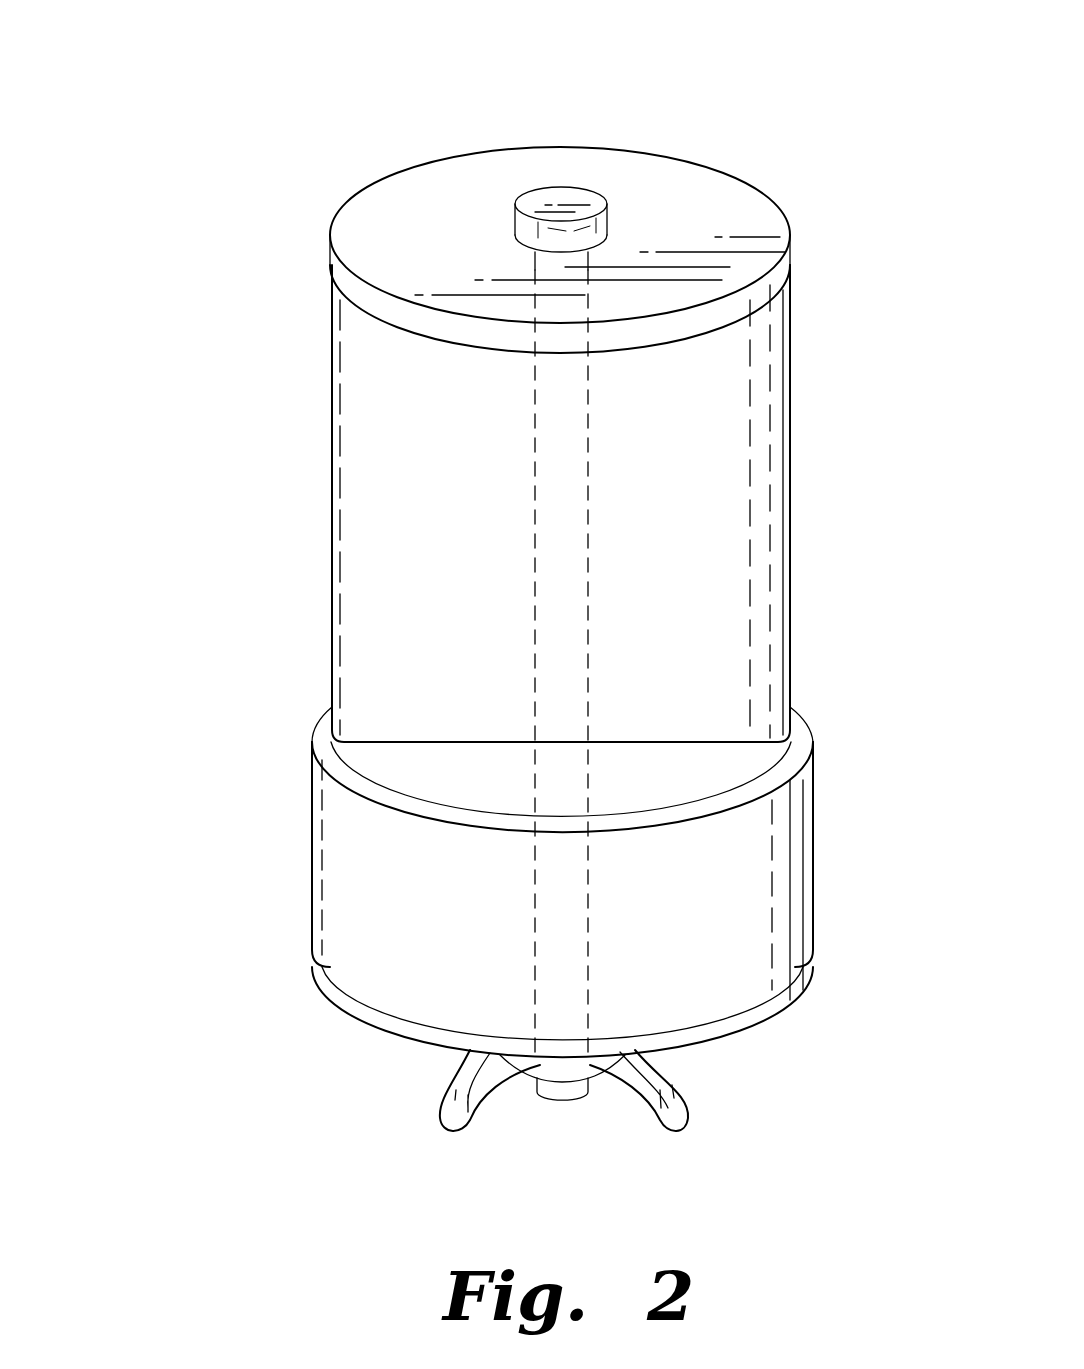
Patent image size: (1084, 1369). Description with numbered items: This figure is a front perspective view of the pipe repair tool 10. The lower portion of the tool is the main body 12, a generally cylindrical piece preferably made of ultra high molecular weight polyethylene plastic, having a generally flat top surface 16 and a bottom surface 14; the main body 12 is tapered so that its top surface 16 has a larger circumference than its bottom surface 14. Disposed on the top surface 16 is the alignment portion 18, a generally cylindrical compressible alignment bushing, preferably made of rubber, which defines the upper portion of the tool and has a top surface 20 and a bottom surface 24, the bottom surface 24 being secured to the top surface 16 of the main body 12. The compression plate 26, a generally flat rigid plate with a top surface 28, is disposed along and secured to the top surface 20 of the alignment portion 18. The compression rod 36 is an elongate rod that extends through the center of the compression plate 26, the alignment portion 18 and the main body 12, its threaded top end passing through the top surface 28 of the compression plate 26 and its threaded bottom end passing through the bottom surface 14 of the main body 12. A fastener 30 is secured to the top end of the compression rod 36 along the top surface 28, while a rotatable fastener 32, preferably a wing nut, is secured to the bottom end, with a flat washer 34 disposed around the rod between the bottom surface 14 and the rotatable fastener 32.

The pipe repair tool 10 is at (134, 122).
The main body 12 is at (332, 908).
The bottom surface 14 is at (733, 1035).
The top surface 16 is at (803, 727).
The alignment portion 18 is at (777, 448).
The top surface 20 is at (388, 325).
The bottom surface 24 is at (360, 787).
The compression plate 26 is at (727, 198).
The top surface 28 is at (428, 238).
The fastener 30 is at (558, 188).
The rotatable fastener 32 is at (685, 1118).
The flat washer 34 is at (470, 1060).
The compression rod 36 is at (537, 625).